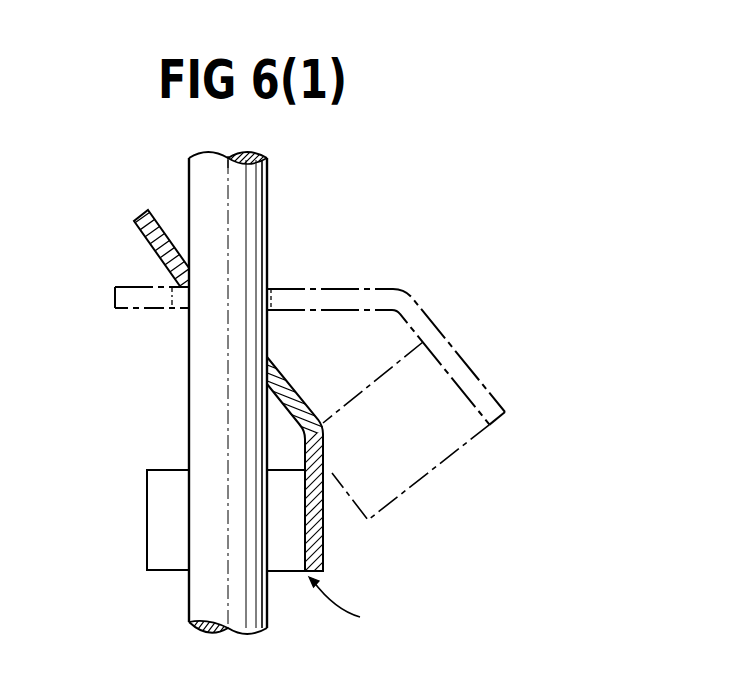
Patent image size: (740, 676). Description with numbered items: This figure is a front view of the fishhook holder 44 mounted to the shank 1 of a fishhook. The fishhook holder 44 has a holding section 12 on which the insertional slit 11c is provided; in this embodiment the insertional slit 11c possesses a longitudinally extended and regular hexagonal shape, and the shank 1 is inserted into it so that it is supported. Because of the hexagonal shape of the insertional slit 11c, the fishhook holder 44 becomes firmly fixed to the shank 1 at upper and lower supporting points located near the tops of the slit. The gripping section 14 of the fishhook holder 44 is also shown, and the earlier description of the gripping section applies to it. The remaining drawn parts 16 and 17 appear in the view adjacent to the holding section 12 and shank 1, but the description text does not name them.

The shank 1 is at (223, 372).
The insertional slit 11c is at (270, 290).
The holding section 12 is at (305, 453).
The gripping section 14 is at (155, 503).
The inclined strip 16 is at (183, 278).
The upper surface of bent plate 17 is at (275, 364).
The fishhook holder 44 is at (356, 610).